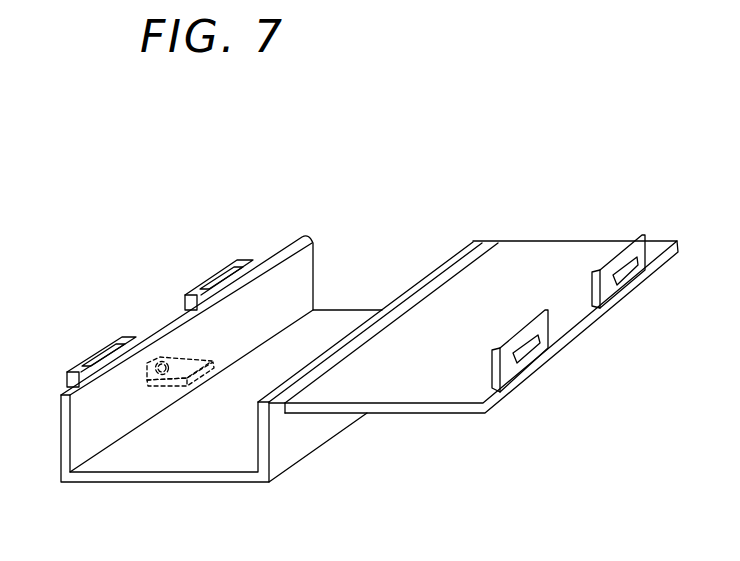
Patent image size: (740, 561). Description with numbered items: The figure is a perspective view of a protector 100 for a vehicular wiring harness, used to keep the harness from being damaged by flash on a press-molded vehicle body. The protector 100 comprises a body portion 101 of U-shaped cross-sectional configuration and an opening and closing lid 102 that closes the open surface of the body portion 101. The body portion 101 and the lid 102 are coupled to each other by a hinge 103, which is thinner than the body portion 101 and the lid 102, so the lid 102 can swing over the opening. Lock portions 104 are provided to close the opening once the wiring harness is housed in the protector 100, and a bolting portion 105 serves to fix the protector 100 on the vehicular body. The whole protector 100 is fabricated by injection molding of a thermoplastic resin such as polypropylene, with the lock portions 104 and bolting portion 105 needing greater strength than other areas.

The protector 100 is at (377, 447).
The body portion 101 is at (140, 483).
The opening and closing lid 102 is at (461, 414).
The hinge 103 is at (277, 407).
The lock portions 104 is at (104, 349).
The bolting portion 105 is at (137, 386).